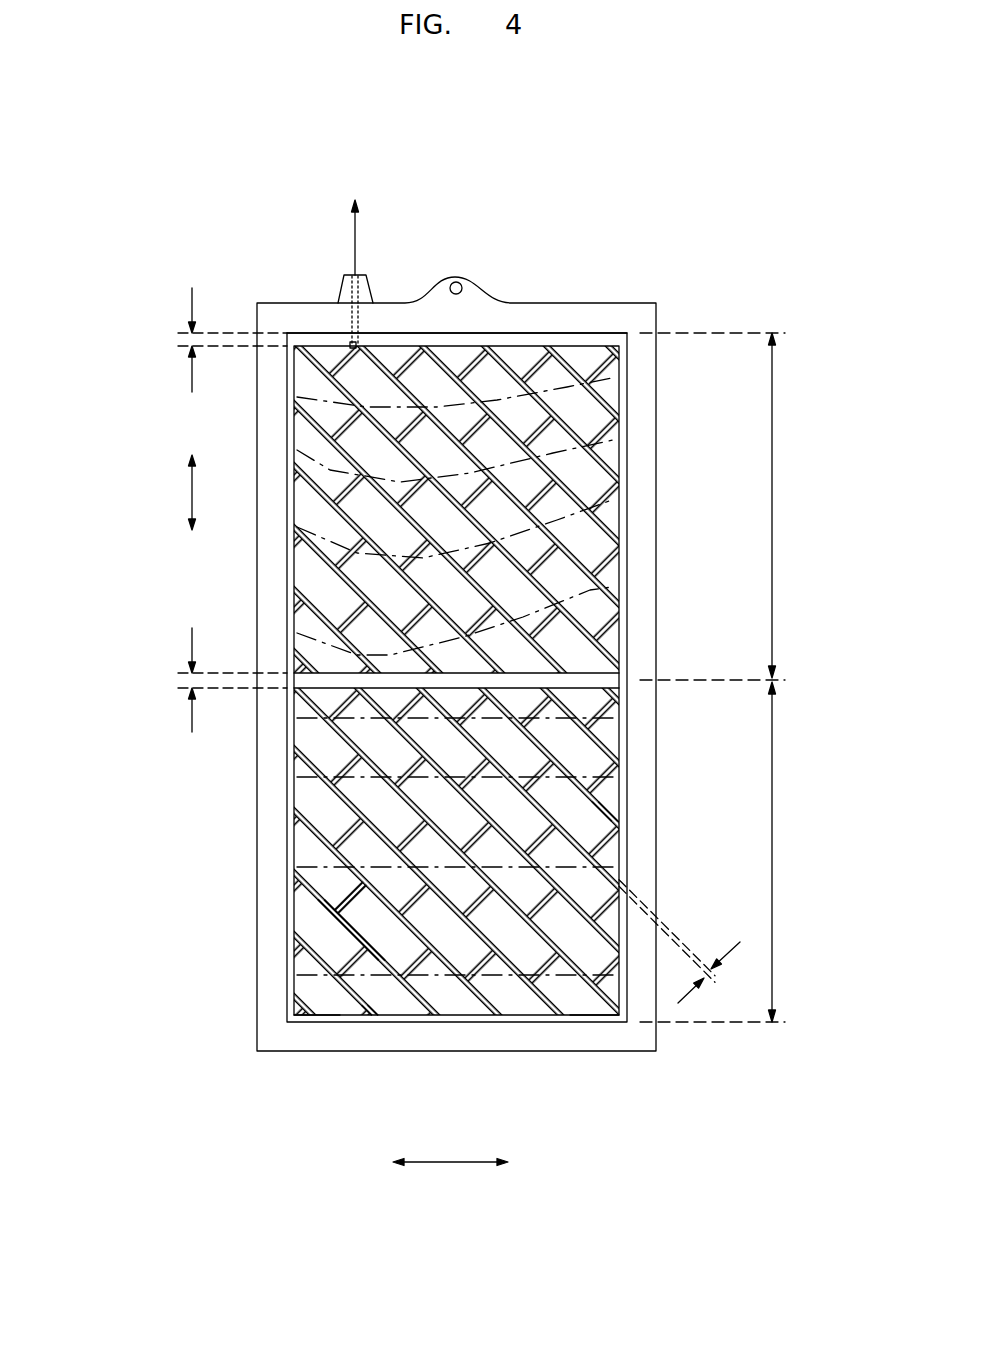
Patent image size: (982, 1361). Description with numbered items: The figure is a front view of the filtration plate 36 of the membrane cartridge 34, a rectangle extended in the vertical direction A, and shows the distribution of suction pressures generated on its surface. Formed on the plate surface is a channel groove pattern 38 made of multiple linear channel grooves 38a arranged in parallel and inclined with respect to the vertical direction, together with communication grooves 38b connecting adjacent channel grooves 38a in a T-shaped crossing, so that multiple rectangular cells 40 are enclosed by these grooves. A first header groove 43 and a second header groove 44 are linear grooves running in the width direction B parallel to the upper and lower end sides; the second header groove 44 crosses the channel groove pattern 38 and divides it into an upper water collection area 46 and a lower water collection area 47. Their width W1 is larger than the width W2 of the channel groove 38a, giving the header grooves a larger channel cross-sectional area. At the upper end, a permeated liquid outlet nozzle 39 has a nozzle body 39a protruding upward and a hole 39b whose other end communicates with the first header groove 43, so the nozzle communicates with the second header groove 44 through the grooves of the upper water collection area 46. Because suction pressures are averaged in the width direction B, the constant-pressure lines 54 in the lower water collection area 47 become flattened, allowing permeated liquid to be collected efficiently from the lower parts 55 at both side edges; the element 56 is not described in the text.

The membrane cartridge 34 is at (663, 296).
The filtration plate 36 is at (258, 1051).
The channel groove pattern 38 is at (125, 878).
The channel groove 38a is at (292, 950).
The communication groove 38b is at (292, 950).
The permeated liquid outlet nozzle 39 is at (335, 277).
The nozzle body 39a is at (372, 297).
The hole 39b is at (367, 303).
The rectangular cell 40 is at (605, 605).
The first header groove 43 is at (532, 334).
The second header groove 44 is at (588, 668).
The upper water collection area 46 is at (732, 506).
The lower water collection area 47 is at (732, 852).
The constant-pressure line 54 is at (603, 380).
The lower part 55 is at (316, 992).
The edge rib 56 is at (373, 1000).
The width of the header grooves W1 is at (213, 510).
The width of the channel groove W2 is at (687, 943).
The vertical direction A is at (172, 492).
The width direction B is at (450, 1145).